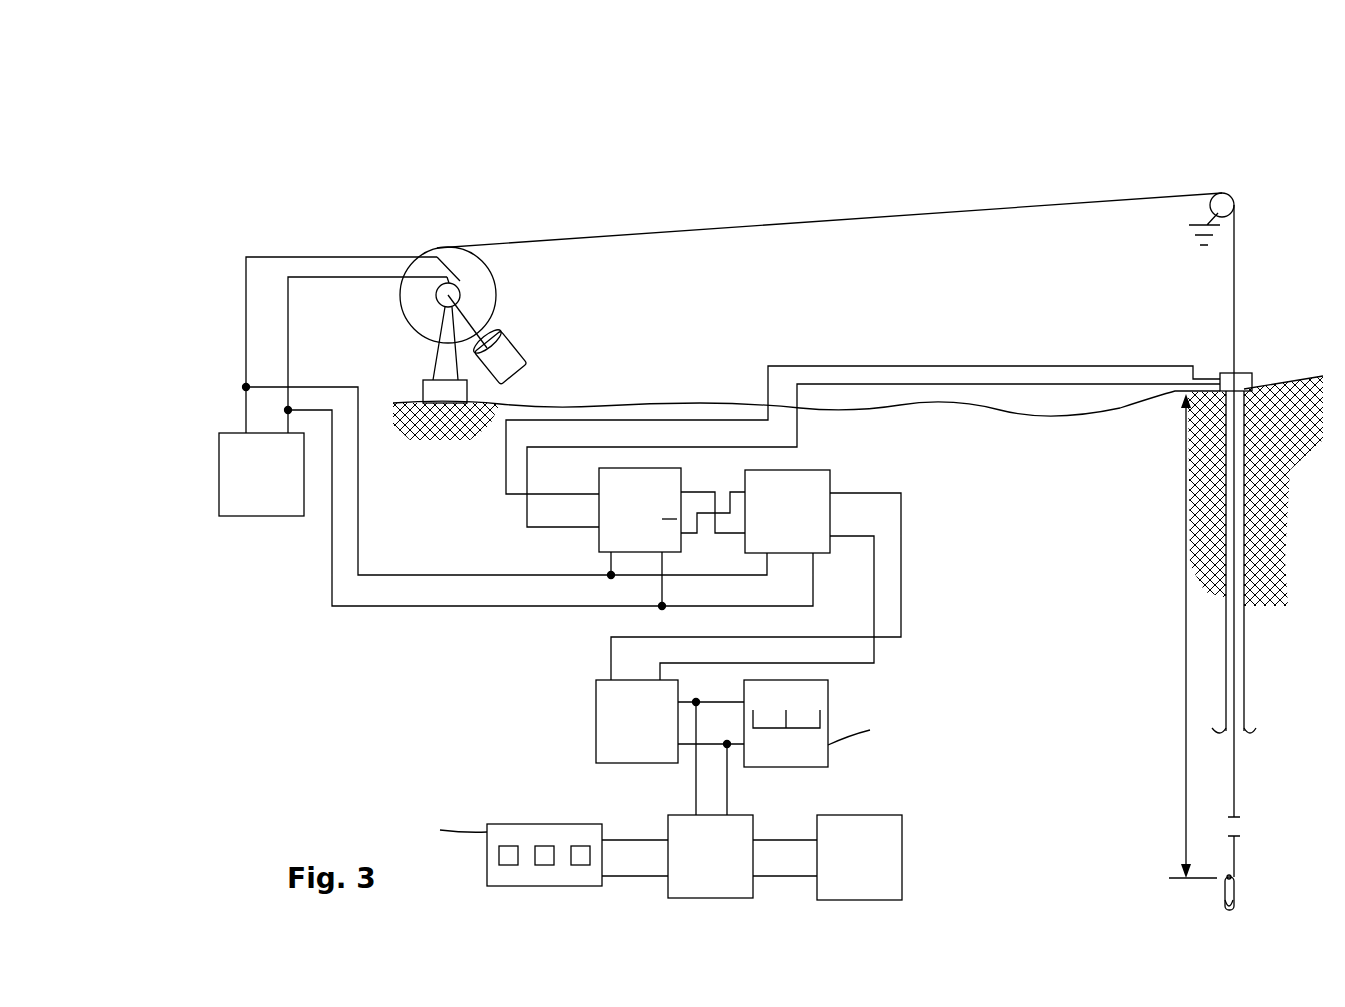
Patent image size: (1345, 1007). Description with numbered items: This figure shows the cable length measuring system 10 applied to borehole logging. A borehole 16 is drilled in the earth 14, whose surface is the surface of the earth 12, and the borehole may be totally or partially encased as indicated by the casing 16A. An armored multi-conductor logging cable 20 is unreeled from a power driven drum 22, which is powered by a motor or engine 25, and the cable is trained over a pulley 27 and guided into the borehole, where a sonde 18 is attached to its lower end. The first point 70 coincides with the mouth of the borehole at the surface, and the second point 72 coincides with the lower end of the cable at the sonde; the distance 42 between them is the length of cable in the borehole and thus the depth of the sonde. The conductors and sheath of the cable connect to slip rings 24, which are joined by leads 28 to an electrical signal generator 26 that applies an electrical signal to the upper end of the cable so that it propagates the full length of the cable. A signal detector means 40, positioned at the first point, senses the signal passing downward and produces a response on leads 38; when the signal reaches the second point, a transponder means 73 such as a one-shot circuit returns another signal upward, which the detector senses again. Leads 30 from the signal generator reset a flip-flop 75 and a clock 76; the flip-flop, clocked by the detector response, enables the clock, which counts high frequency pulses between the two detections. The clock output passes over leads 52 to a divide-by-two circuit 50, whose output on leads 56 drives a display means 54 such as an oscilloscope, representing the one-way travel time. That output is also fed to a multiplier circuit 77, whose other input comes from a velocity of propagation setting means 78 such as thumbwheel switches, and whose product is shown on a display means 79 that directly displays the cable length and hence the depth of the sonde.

The cable length measuring system 10 is at (994, 319).
The surface of the earth 12 is at (650, 405).
The earth 14 is at (1074, 521).
The borehole 16 is at (1245, 620).
The casing 16A is at (1258, 442).
The sonde 18 is at (1222, 906).
The armored multi-conductor logging cable 20 is at (820, 223).
The power driven drum 22 is at (495, 308).
The slip rings 24 is at (460, 280).
The motor or engine 25 is at (522, 362).
The electrical signal generator 26 is at (219, 508).
The pulley 27 is at (1237, 210).
The leads 28 is at (288, 323).
The leads 30 is at (345, 387).
The leads 38 is at (827, 384).
The signal detector means 40 is at (1270, 374).
The distance 42 is at (1184, 565).
The divide-by-two circuit 50 is at (596, 752).
The leads 52 is at (876, 542).
The display means 54 is at (828, 715).
The leads 56 is at (713, 744).
The first point 70 is at (1237, 372).
The second point 72 is at (1233, 877).
The transponder means 73 is at (1235, 878).
The flip-flop 75 is at (598, 490).
The clock 76 is at (805, 470).
The multiplier circuit 77 is at (750, 820).
The velocity of propagation setting means 78 is at (563, 826).
The display means 79 is at (900, 825).